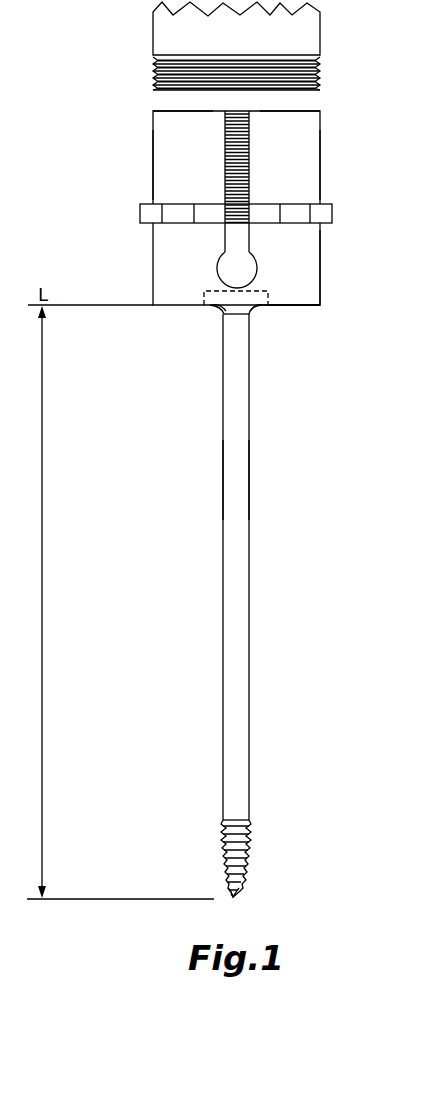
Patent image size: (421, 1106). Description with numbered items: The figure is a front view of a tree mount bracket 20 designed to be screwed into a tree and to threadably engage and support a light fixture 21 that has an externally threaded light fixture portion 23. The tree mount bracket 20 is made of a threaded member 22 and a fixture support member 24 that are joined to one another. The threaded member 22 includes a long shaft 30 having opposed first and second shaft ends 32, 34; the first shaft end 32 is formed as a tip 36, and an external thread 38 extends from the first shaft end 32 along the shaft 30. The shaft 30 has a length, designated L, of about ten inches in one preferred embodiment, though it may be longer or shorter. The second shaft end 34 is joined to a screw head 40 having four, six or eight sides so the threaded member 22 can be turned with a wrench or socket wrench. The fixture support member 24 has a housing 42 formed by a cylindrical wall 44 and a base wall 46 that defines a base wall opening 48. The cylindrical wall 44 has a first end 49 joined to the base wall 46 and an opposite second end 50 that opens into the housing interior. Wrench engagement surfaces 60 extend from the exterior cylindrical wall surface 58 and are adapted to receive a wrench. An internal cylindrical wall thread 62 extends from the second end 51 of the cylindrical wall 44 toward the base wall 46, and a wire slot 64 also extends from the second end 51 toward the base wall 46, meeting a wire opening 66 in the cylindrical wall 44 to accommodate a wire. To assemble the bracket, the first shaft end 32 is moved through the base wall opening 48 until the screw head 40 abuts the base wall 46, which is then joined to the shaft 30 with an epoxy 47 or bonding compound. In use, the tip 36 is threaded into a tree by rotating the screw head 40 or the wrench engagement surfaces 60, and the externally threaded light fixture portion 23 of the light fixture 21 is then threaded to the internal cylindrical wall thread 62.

The tree mount bracket 20 is at (310, 161).
The light fixture 21 is at (312, 35).
The threaded member 22 is at (240, 562).
The externally threaded light fixture portion 23 is at (178, 60).
The fixture support member 24 is at (317, 293).
The shaft 30 is at (240, 478).
The first shaft end 32 is at (230, 896).
The second shaft end 34 is at (227, 316).
The tip 36 is at (235, 898).
The external thread 38 is at (248, 846).
The screw head 40 is at (203, 298).
The housing 42 is at (310, 184).
The cylindrical wall 44 is at (310, 256).
The base wall 46 is at (303, 318).
The epoxy 47 is at (249, 308).
The base wall opening 48 is at (213, 305).
The first end 49 is at (321, 304).
The second end 50 is at (312, 110).
The second end 51 is at (160, 110).
The exterior cylindrical wall surface 58 is at (152, 163).
The wrench engagement surfaces 60 is at (183, 208).
The internal cylindrical wall thread 62 is at (250, 133).
The wire slot 64 is at (245, 246).
The wire opening 66 is at (230, 265).